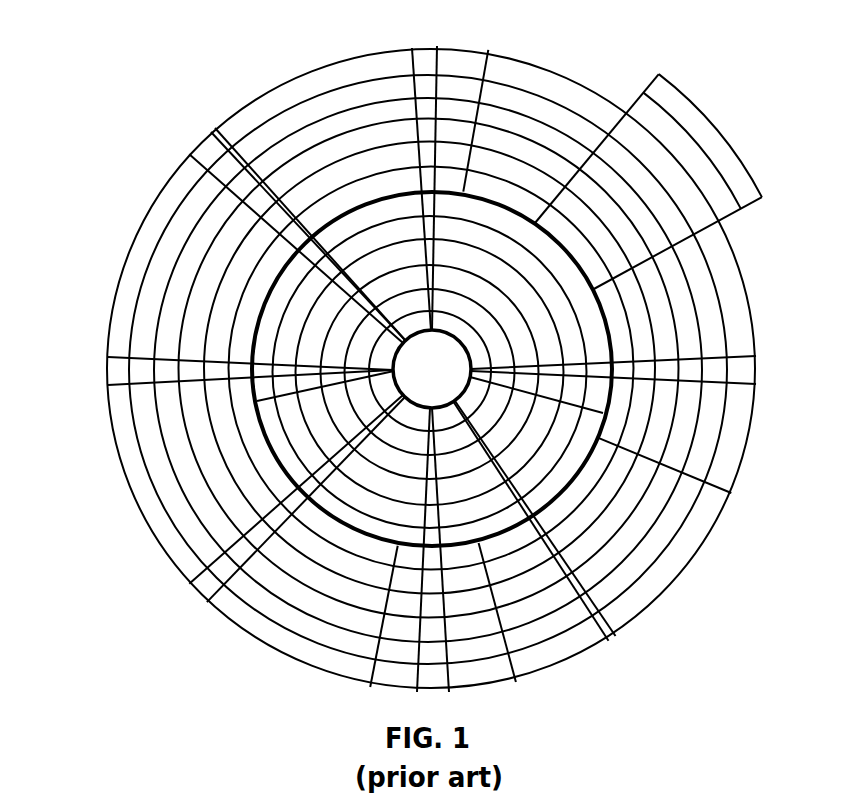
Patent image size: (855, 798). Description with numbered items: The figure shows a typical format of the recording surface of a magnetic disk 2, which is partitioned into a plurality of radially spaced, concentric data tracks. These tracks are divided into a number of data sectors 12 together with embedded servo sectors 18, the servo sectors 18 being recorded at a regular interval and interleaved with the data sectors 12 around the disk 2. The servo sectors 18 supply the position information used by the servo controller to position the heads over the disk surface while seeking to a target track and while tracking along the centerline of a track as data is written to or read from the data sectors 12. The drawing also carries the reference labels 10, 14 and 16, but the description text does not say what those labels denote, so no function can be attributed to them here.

The magnetic disk 2 is at (176, 116).
The data track 10 is at (713, 440).
The data sector 12 is at (706, 132).
The inner zone 14 is at (300, 412).
The outer zone 16 is at (186, 239).
The servo sector 18 is at (428, 90).